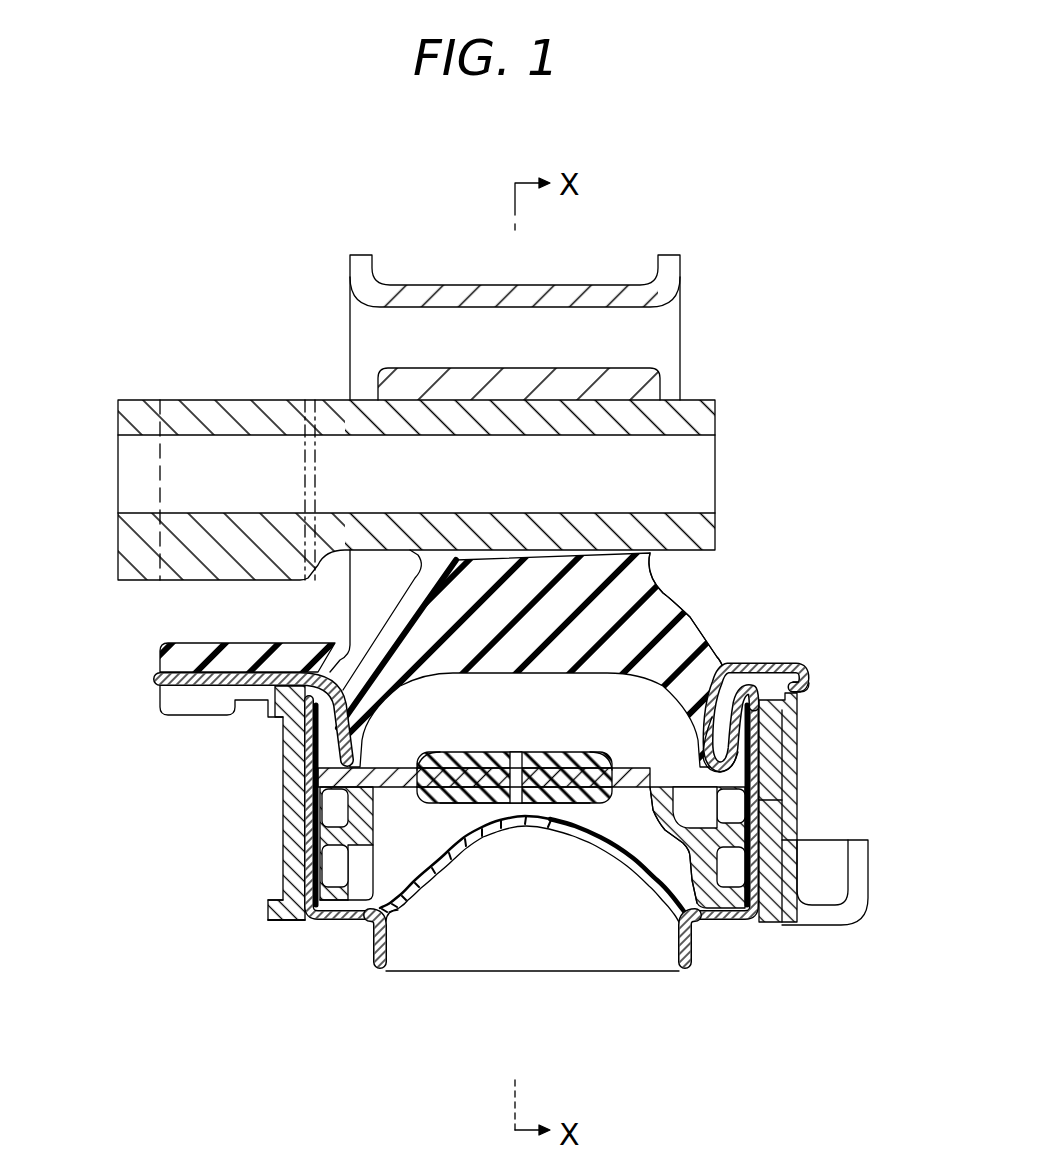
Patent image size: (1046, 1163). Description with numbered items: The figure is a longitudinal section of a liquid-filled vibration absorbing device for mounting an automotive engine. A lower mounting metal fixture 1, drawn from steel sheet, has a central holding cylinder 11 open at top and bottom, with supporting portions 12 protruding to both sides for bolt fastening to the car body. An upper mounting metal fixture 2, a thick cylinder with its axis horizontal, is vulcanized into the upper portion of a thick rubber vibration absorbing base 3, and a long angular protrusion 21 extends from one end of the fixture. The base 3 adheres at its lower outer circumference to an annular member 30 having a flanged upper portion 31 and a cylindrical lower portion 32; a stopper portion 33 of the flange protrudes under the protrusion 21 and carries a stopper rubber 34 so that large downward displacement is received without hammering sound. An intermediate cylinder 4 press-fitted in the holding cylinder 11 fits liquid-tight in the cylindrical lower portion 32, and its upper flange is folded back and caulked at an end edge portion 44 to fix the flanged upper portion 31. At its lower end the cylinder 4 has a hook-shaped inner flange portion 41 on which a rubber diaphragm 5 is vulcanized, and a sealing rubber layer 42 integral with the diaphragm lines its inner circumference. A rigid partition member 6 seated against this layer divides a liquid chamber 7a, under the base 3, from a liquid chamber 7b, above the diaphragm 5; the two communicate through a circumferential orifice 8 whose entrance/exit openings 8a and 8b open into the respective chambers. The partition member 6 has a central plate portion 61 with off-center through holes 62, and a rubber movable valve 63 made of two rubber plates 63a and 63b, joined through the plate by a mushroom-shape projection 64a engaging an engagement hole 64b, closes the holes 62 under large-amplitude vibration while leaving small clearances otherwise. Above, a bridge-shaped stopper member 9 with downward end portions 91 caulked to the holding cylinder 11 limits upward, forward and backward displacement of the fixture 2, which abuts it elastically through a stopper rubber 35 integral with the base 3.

The lower mounting metal fixture 1 is at (262, 880).
The upper mounting metal fixture 2 is at (683, 418).
The vibration absorbing base 3 is at (658, 610).
The intermediate cylinder 4 is at (298, 922).
The diaphragm 5 is at (513, 887).
The partition member 6 is at (650, 758).
The liquid-filled chamber 7a is at (300, 735).
The liquid-filled chamber 7b is at (637, 830).
The orifice 8 is at (337, 863).
The entrance/exit of the orifice 8a is at (765, 727).
The entrance/exit of the orifice 8b is at (450, 857).
The stopper member 9 is at (430, 283).
The holding cylinder 11 is at (305, 775).
The supporting portion 12 is at (830, 925).
The protrusion 21 is at (137, 538).
The annular member 30 is at (270, 725).
The flanged upper portion 31 is at (780, 663).
The cylindrical lower portion 32 is at (770, 747).
The stopper portion 33 is at (165, 680).
The stopper rubber 34 is at (197, 650).
The stopper rubber 35 is at (570, 385).
The inner flange portion 41 is at (372, 915).
The sealing rubber layer 42 is at (750, 790).
The end edge portion 44 is at (809, 672).
The central plate portion 61 is at (690, 655).
The through holes 62 is at (470, 805).
The movable valve 63 is at (493, 742).
The rubber plate 63a is at (563, 775).
The rubber plate 63b is at (557, 803).
The mushroom-shape projection 64a is at (525, 827).
The engagement hole 64b is at (510, 828).
The end portion 91 is at (358, 600).